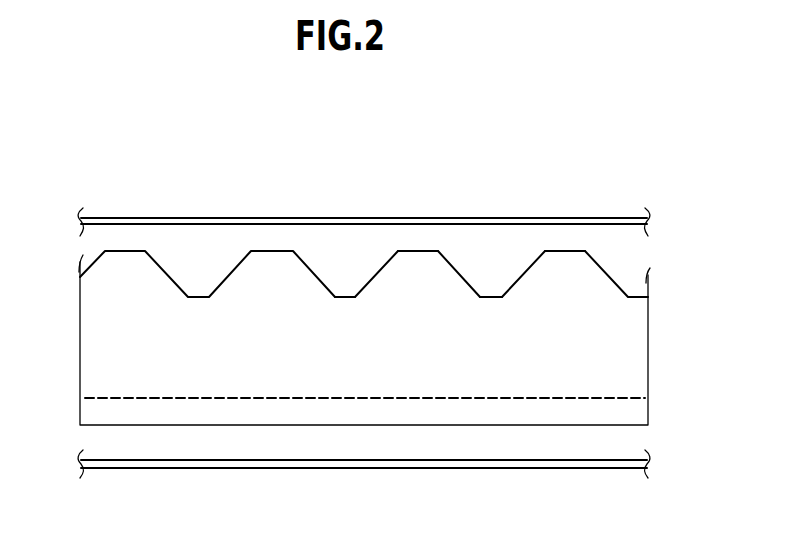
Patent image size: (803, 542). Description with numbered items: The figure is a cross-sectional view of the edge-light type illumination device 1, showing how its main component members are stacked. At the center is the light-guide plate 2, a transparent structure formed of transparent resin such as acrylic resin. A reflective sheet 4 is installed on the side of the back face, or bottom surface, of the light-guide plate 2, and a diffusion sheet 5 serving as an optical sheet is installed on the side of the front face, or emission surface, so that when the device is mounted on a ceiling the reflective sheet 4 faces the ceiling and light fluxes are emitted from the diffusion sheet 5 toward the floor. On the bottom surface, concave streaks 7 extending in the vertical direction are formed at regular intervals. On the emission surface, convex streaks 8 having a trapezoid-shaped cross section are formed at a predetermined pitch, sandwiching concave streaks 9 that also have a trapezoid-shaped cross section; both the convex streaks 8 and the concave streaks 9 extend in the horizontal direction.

The edge-light type illumination device 1 is at (397, 181).
The light-guide plate 2 is at (619, 334).
The reflective sheet 4 is at (460, 470).
The diffusion sheet 5 is at (582, 216).
The concave streaks 7 is at (623, 410).
The convex streaks 8 is at (565, 249).
The concave streaks 9 is at (346, 296).